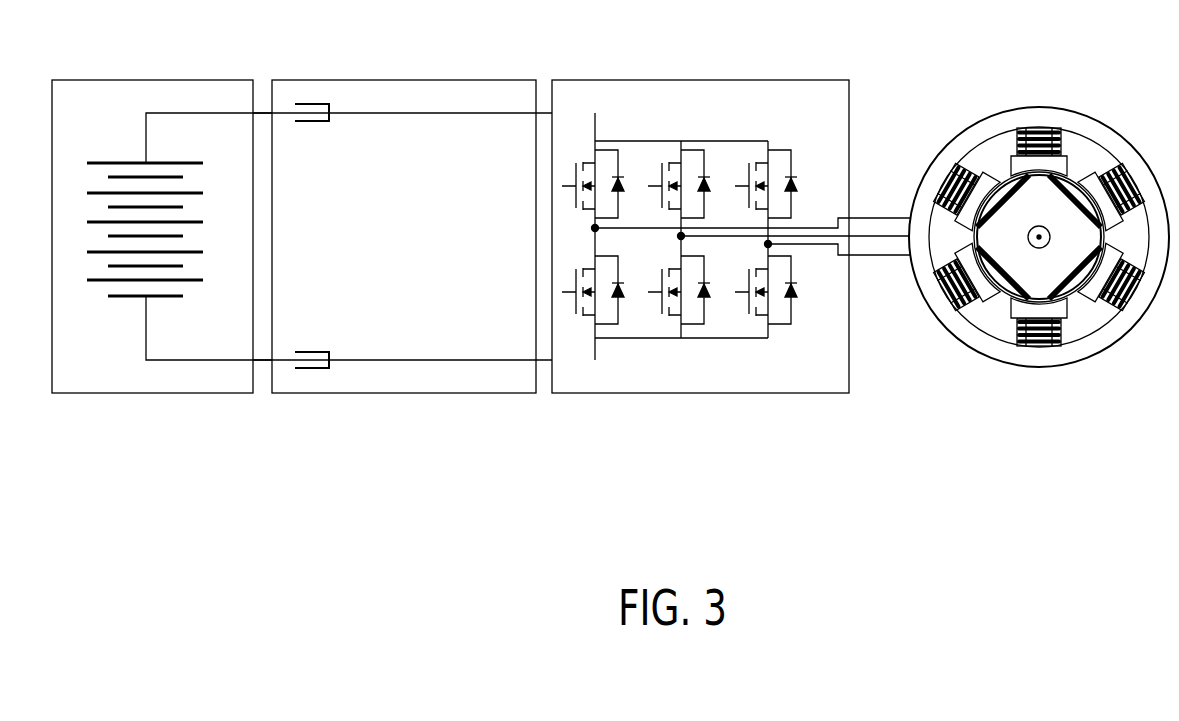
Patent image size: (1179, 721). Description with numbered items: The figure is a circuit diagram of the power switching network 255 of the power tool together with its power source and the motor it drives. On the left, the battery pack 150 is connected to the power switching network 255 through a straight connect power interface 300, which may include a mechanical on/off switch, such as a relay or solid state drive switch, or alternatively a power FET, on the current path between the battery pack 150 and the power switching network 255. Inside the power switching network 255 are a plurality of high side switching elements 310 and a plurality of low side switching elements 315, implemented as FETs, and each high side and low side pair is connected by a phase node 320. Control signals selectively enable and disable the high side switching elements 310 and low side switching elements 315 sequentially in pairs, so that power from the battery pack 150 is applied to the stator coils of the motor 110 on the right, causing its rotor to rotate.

The battery pack 150 is at (158, 80).
The straight connect power interface 300 is at (398, 80).
The power switching network 255 is at (678, 80).
The high side switching elements 310 is at (616, 172).
The low side switching elements 315 is at (618, 324).
The phase node 320 is at (594, 229).
The motor 110 is at (1043, 368).